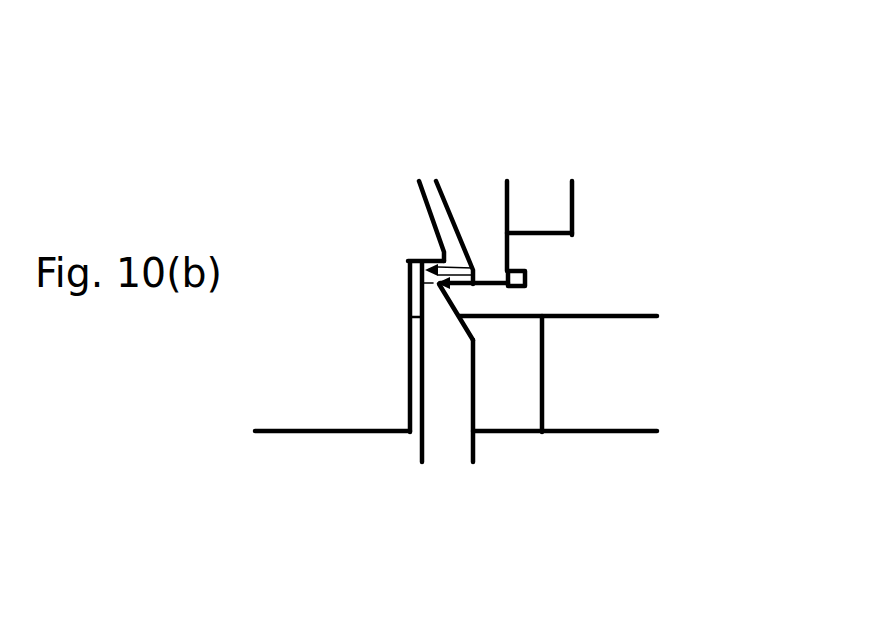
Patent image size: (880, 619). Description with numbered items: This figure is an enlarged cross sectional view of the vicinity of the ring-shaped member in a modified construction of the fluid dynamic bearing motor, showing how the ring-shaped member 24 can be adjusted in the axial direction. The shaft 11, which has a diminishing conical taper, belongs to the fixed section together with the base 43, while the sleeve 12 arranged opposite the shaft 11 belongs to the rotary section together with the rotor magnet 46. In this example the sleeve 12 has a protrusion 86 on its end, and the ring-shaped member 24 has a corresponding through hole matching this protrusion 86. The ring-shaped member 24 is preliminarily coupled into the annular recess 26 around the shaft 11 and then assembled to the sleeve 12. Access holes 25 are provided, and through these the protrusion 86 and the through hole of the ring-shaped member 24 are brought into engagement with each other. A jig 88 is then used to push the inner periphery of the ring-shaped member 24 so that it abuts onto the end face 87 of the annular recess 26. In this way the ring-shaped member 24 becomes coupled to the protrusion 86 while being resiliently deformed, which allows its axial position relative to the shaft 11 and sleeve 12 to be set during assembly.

The shaft 11 is at (402, 205).
The sleeve 12 is at (472, 210).
The rotor magnet 46 is at (538, 205).
The end face 87 is at (420, 260).
The ring-shaped member 24 is at (527, 270).
The protrusion 86 is at (493, 285).
The base 43 is at (610, 393).
The annular recess 26 is at (407, 295).
The jig 88 is at (447, 362).
The access holes 25 is at (507, 398).